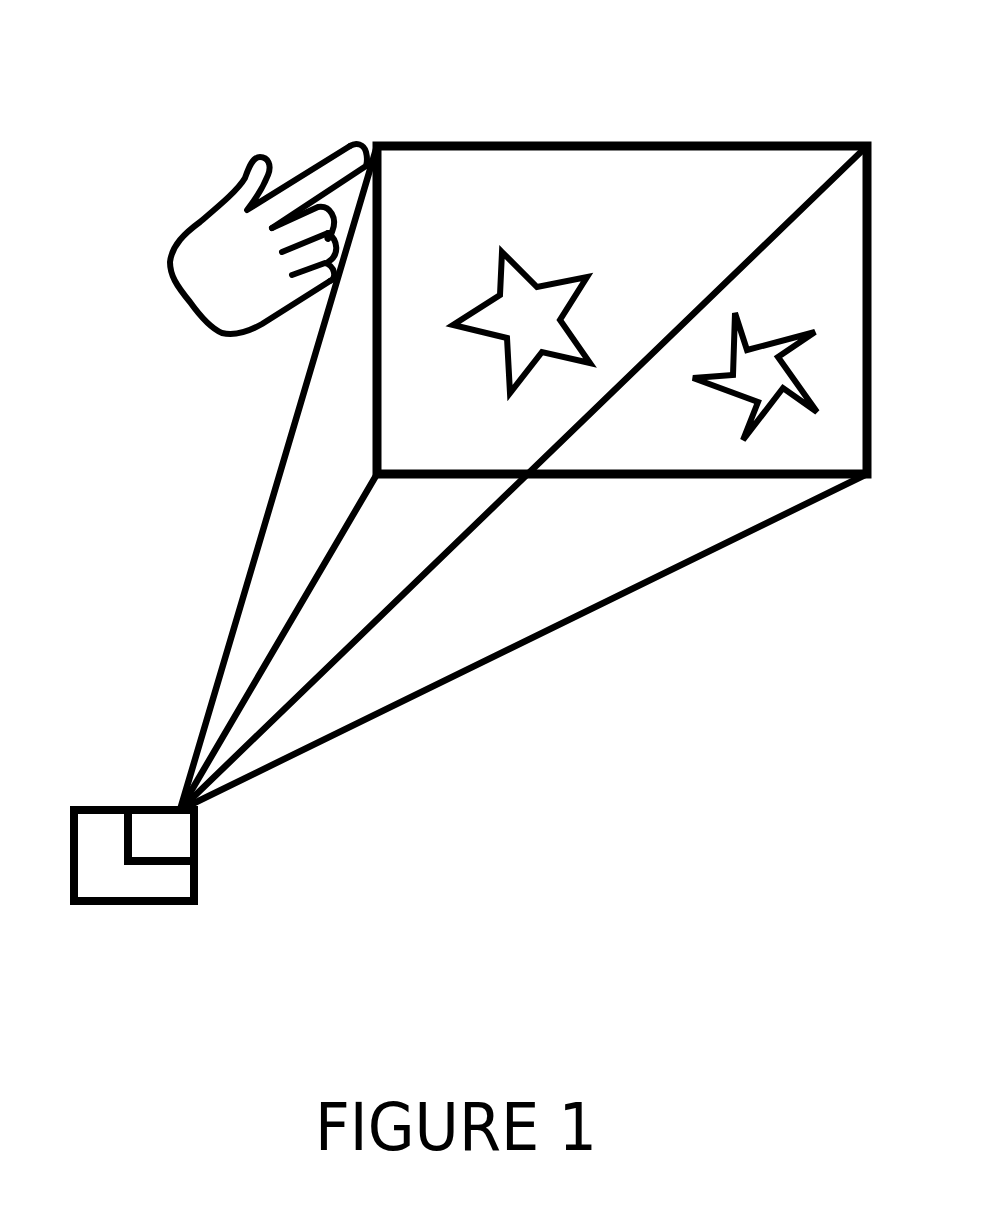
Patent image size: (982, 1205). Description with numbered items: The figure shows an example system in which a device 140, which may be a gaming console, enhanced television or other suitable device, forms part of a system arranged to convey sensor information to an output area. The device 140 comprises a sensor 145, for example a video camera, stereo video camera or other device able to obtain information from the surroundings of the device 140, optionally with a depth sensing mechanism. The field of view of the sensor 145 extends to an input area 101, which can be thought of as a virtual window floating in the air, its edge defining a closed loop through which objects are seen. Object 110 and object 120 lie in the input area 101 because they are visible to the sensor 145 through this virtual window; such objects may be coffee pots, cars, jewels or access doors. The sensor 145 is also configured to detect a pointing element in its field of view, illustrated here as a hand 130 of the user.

The input area 101 is at (657, 142).
The object 110 is at (556, 277).
The object 120 is at (800, 330).
The hand 130 is at (200, 217).
The device 140 is at (90, 823).
The sensor 145 is at (173, 842).